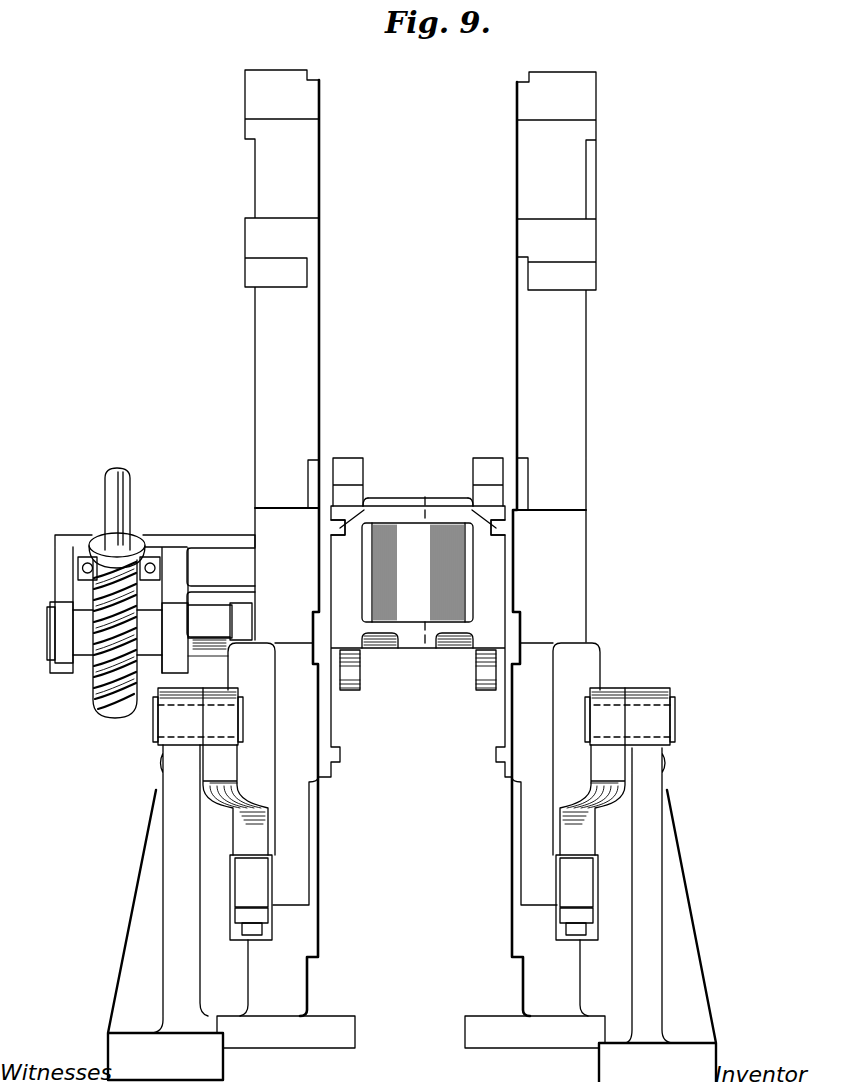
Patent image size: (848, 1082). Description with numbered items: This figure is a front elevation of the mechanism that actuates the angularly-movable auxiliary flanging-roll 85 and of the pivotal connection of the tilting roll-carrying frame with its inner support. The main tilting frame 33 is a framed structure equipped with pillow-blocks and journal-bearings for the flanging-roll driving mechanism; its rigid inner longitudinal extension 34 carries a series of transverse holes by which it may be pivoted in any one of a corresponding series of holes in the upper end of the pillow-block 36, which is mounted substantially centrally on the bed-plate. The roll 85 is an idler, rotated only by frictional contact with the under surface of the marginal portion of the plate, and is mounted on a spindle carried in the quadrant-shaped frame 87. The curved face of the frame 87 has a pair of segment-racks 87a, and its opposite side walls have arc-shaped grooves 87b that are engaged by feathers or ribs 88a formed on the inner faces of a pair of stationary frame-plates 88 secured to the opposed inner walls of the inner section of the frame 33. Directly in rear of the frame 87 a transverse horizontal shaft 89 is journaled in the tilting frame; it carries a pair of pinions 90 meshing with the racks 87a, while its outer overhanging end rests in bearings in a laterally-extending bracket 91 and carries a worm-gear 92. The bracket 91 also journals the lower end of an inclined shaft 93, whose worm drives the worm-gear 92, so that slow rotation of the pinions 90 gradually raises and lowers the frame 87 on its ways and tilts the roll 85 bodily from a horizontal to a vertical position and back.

The main tilting frame 33 is at (257, 522).
The inner longitudinal extension 34 is at (414, 852).
The pillow-block 36 is at (166, 790).
The auxiliary flanging-roll 85 is at (417, 572).
The quadrant-shaped frame 87 is at (407, 513).
The segment-racks 87a is at (346, 466).
The arc-shaped grooves 87b is at (364, 508).
The stationary frame-plates 88 is at (325, 573).
The feathers or ribs 88a is at (333, 523).
The transverse horizontal shaft 89 is at (207, 637).
The pinions 90 is at (360, 678).
The laterally-extending bracket 91 is at (185, 548).
The worm-gear 92 is at (106, 712).
The inclined shaft 93 is at (108, 485).